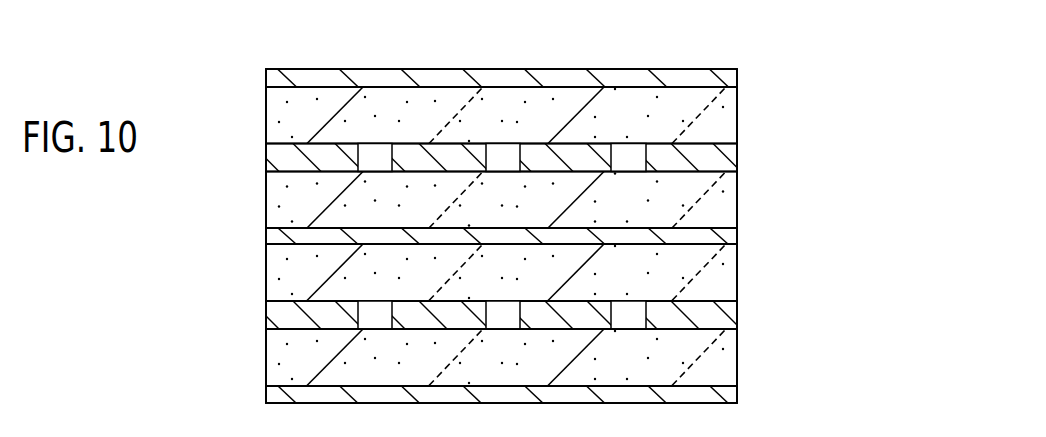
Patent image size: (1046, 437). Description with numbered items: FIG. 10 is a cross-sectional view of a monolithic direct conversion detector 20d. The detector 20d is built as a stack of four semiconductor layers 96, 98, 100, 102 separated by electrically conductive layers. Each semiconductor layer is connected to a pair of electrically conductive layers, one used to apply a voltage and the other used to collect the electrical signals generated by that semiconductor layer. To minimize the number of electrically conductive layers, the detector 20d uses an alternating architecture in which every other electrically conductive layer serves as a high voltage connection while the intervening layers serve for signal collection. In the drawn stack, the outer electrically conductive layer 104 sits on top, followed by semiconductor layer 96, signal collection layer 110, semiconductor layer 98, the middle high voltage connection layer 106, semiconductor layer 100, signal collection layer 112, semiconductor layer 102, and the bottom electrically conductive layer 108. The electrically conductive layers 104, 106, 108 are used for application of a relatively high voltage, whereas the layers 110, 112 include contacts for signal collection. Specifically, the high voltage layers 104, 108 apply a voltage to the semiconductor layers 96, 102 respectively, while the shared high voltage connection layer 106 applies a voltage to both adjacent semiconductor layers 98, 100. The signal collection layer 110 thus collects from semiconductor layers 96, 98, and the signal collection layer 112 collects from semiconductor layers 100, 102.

The detector 20d is at (768, 42).
The electrically conductive layer 104 is at (266, 75).
The semiconductor layer 96 is at (737, 108).
The electrically conductive layer 110 is at (266, 150).
The semiconductor layer 98 is at (737, 196).
The electrically conductive layer 106 is at (266, 232).
The semiconductor layer 100 is at (737, 270).
The electrically conductive layer 112 is at (266, 310).
The semiconductor layer 102 is at (737, 352).
The electrically conductive layer 108 is at (266, 392).